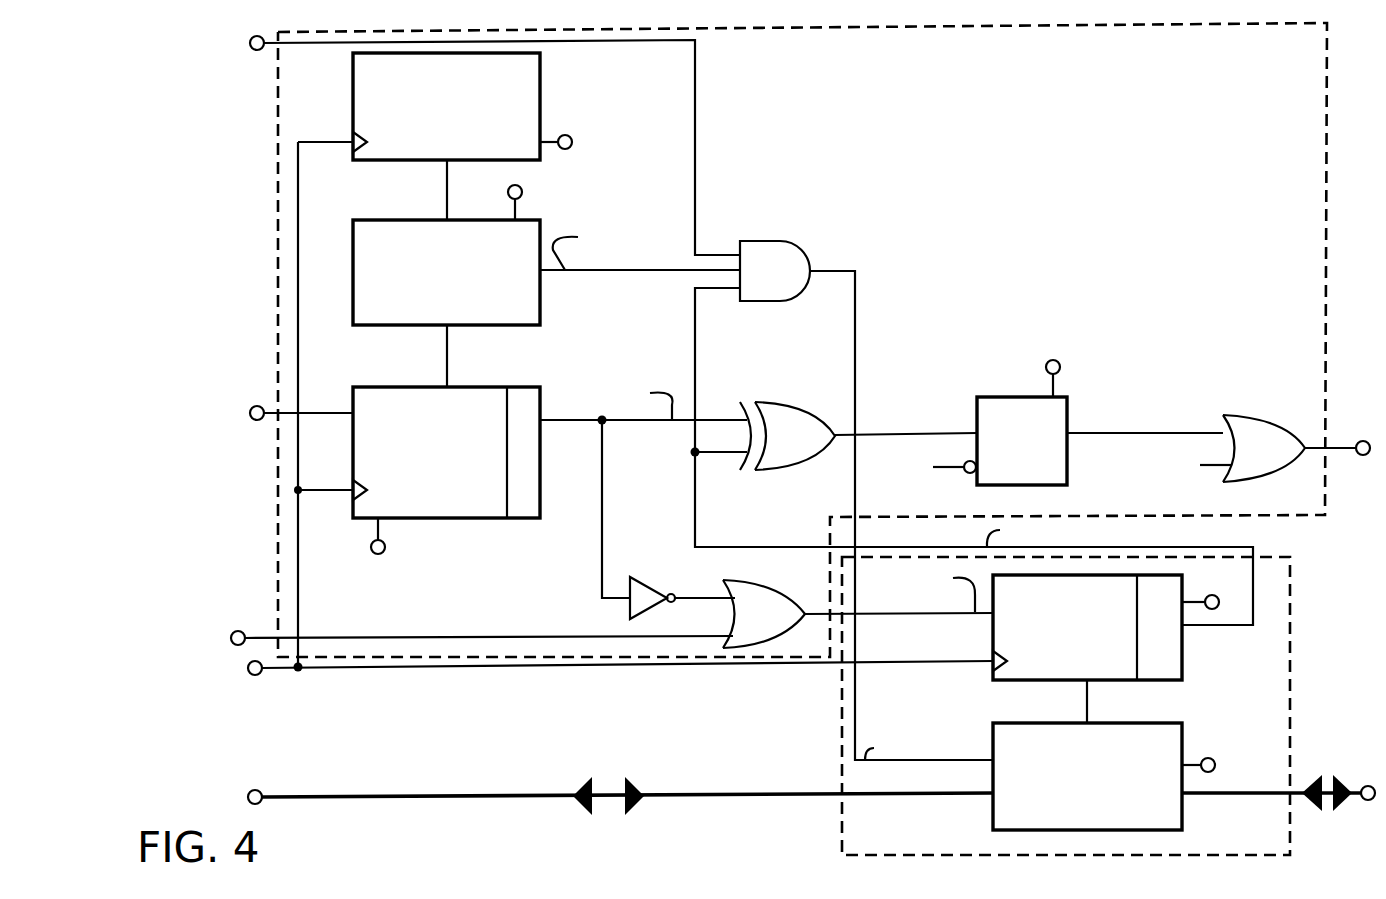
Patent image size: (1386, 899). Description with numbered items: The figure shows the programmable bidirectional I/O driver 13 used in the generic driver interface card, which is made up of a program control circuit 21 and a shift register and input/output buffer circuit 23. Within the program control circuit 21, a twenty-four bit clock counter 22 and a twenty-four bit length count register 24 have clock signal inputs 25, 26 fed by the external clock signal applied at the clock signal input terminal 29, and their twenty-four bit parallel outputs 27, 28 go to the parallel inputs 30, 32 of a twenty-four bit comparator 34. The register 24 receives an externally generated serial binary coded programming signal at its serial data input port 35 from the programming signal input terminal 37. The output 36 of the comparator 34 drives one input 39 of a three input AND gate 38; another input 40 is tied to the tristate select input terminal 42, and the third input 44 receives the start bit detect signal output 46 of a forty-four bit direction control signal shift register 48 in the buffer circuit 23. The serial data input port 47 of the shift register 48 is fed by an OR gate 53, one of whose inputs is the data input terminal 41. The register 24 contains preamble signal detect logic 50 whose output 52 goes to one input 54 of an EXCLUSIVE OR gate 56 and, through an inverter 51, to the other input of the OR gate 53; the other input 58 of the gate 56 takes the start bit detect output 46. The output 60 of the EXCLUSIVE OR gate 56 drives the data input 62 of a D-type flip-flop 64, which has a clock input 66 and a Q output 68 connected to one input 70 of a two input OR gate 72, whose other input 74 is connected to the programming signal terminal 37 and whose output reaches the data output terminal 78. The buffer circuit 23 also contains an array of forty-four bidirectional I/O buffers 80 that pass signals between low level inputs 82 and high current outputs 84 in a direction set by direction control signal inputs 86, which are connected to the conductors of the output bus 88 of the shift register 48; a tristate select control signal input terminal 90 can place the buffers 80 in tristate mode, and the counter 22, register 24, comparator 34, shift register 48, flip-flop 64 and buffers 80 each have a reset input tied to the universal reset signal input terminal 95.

The programmable bidirectional I/O driver 13 is at (333, 823).
The program control circuit 21 is at (278, 274).
The twenty-four bit clock counter 22 is at (543, 98).
The shift register and input/output (I/O) buffer circuit 23 is at (1292, 702).
The twenty-four bit length count register 24 is at (452, 520).
The clock signal input 25 is at (352, 139).
The clock signal input 26 is at (352, 492).
The twenty-four bit parallel output 27 is at (447, 163).
The twenty-four bit parallel output 28 is at (447, 385).
The clock signal input terminal 29 is at (255, 675).
The parallel input 30 is at (447, 216).
The parallel input 32 is at (445, 330).
The twenty-four bit comparator 34 is at (353, 252).
The serial data input port 35 is at (353, 410).
The output 36 is at (541, 276).
The programming signal input terminal 37 is at (257, 406).
The three input AND gate 38 is at (795, 244).
The input 39 is at (737, 275).
The input 40 is at (737, 251).
The data input terminal 41 is at (730, 592).
The tristate select input terminal 42 is at (257, 50).
The third input 44 is at (737, 290).
The start bit detect signal output 46 is at (1185, 630).
The serial data input port 47 is at (990, 615).
The forty-four bit direction control signal shift register 48 is at (987, 683).
The preamble signal detect logic 50 is at (518, 519).
The inverter 51 is at (650, 582).
The output 52 is at (545, 425).
The OR gate 53 is at (773, 591).
The input 54 is at (740, 415).
The EXCLUSIVE OR gate 56 is at (795, 407).
The input 58 is at (742, 456).
The output 60 is at (840, 440).
The data input (D) 62 is at (975, 430).
The D-type flip-flop 64 is at (1020, 397).
The clock input 66 is at (963, 475).
The Q output 68 is at (1070, 432).
The input 70 is at (1227, 430).
The two input OR gate 72 is at (1260, 416).
The input 74 is at (1223, 472).
The data output terminal 78 is at (1362, 440).
The bidirectional I/O current drivers or buffers 80 is at (1183, 746).
The low level inputs 82 is at (990, 798).
The outputs 84 is at (1185, 796).
The I/O driver direction control signal inputs 86 is at (1098, 716).
The output bus 88 is at (1080, 685).
The tristate select control signal input terminal 90 is at (990, 765).
The universal reset signal input terminal 95 is at (572, 140).